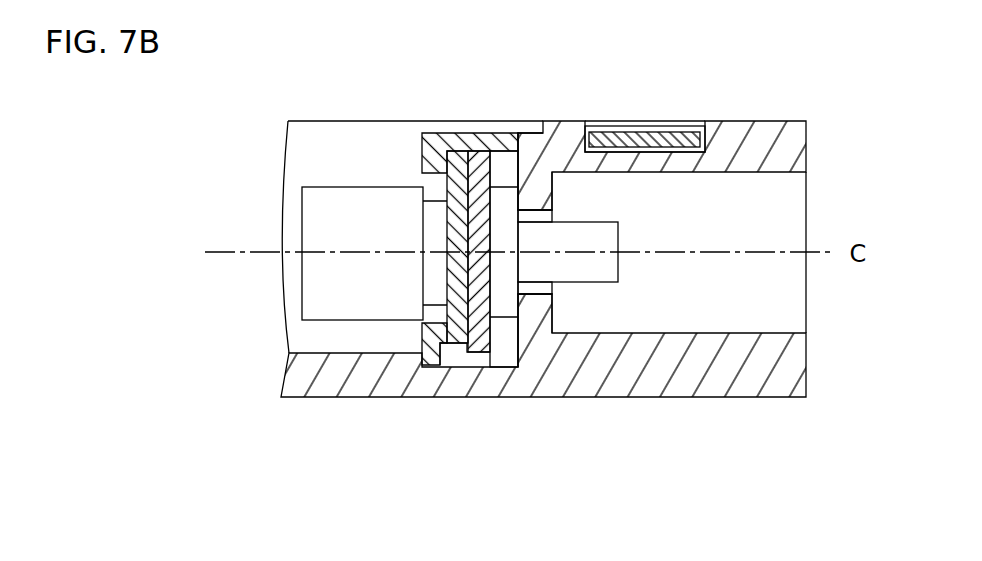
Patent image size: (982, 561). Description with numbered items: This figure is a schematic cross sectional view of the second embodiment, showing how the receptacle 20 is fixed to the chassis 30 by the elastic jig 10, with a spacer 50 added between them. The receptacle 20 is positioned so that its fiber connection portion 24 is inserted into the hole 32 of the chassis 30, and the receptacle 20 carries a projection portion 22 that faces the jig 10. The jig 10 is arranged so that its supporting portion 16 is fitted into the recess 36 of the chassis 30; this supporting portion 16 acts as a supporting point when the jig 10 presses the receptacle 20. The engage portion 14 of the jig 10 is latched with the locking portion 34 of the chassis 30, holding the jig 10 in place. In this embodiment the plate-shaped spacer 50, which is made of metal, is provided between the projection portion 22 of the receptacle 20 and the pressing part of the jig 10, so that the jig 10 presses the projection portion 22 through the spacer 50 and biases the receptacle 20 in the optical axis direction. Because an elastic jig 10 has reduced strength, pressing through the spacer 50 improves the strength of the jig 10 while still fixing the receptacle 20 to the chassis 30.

The jig 10 is at (667, 127).
The engage portion 14 is at (519, 128).
The supporting portion 16 is at (423, 363).
The receptacle 20 is at (327, 297).
The projection portion 22 is at (505, 313).
The fiber connection portion 24 is at (604, 262).
The chassis 30 is at (759, 121).
The hole 32 is at (553, 218).
The locking portion 34 is at (551, 123).
The recess 36 is at (445, 352).
The spacer 50 is at (482, 352).